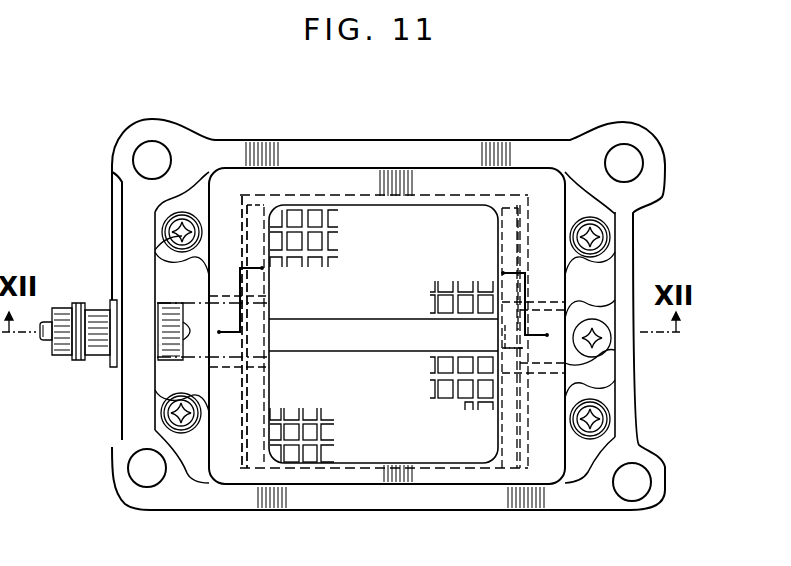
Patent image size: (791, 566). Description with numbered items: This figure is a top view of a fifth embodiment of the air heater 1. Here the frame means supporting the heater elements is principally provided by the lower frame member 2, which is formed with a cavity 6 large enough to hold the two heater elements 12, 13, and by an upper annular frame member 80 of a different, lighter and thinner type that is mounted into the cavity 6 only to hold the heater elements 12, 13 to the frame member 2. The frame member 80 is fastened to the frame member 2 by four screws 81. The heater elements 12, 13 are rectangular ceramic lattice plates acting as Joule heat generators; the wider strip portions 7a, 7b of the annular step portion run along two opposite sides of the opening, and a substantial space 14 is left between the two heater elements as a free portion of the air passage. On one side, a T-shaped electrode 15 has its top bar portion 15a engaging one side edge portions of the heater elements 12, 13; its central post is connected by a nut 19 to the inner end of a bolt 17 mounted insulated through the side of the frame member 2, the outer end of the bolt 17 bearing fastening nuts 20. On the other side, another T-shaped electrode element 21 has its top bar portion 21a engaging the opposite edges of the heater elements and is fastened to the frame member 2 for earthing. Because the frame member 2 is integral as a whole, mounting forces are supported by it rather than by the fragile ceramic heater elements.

The air heater 1 is at (636, 396).
The lower frame member 2 is at (537, 487).
The cavity 6 is at (362, 470).
The wider strip portion 7a is at (258, 466).
The wider strip portion 7b is at (508, 466).
The heater element 12 is at (314, 452).
The heater element 13 is at (317, 212).
The space 14 is at (391, 342).
The electrode 15 is at (197, 313).
The top bar portion of electrode 15a is at (263, 291).
The bolt 17 is at (42, 342).
The nut 19 is at (173, 353).
The fastening nuts 20 is at (97, 355).
The electrode element 21 is at (575, 321).
The top bar portion of electrode element 21a is at (504, 242).
The upper annular frame member 80 is at (447, 183).
The screws 81 is at (168, 236).